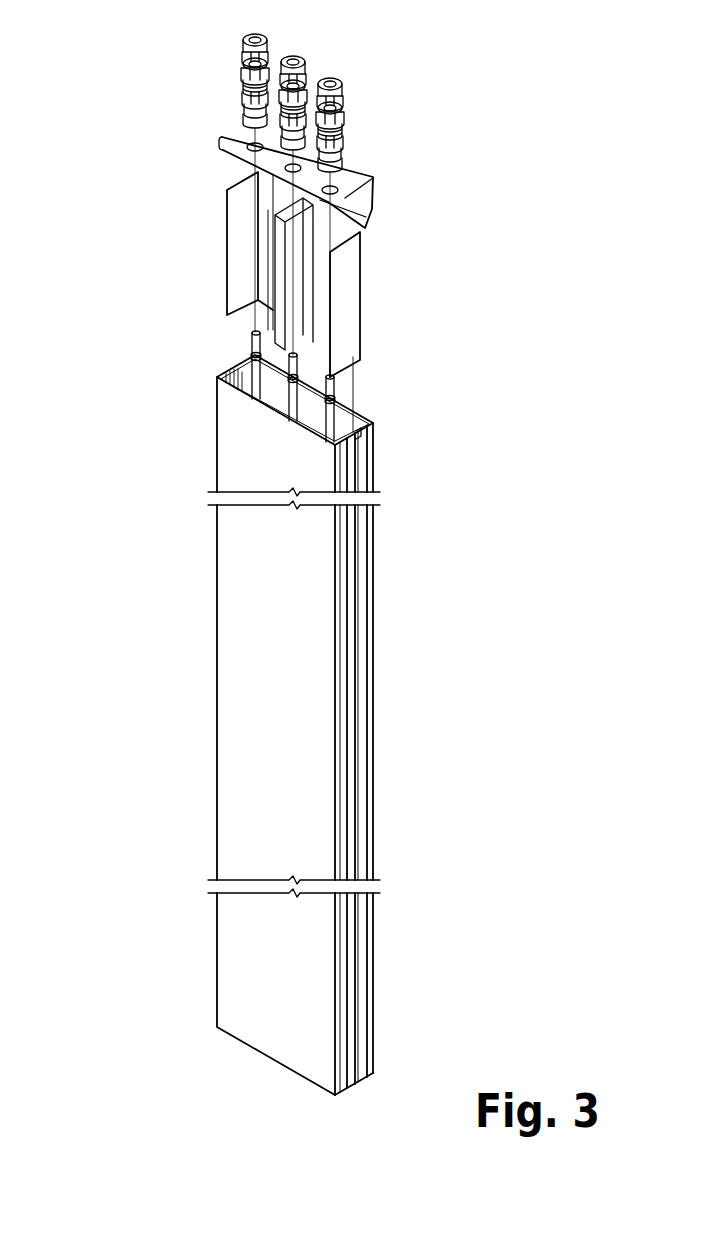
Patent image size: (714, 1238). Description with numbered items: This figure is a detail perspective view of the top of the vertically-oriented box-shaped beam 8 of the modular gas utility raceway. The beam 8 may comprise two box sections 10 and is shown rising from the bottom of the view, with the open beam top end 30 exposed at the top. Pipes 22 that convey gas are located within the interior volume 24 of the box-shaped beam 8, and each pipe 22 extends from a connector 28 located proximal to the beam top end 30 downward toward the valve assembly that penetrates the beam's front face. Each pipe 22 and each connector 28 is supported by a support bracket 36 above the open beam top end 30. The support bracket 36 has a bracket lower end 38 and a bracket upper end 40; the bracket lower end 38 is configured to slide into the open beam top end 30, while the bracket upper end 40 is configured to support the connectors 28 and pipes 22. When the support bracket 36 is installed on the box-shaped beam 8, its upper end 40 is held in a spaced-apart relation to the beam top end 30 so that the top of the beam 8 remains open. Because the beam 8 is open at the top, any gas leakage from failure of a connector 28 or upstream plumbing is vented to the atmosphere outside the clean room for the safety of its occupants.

The box-shaped beam 8 is at (233, 617).
The box sections 10 is at (368, 417).
The pipes 22 is at (290, 352).
The interior volume 24 is at (245, 370).
The connector 28 is at (245, 75).
The beam top end 30 is at (215, 378).
The support bracket 36 is at (348, 255).
The bracket lower end 38 is at (352, 347).
The bracket upper end 40 is at (372, 177).